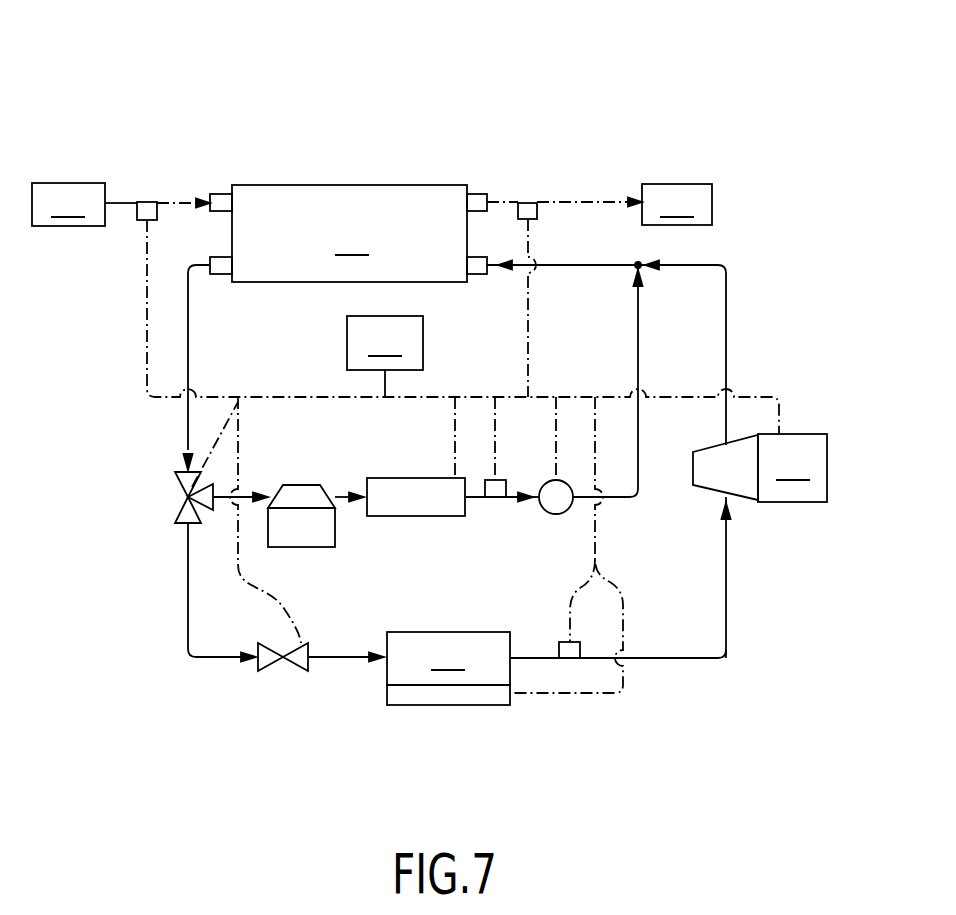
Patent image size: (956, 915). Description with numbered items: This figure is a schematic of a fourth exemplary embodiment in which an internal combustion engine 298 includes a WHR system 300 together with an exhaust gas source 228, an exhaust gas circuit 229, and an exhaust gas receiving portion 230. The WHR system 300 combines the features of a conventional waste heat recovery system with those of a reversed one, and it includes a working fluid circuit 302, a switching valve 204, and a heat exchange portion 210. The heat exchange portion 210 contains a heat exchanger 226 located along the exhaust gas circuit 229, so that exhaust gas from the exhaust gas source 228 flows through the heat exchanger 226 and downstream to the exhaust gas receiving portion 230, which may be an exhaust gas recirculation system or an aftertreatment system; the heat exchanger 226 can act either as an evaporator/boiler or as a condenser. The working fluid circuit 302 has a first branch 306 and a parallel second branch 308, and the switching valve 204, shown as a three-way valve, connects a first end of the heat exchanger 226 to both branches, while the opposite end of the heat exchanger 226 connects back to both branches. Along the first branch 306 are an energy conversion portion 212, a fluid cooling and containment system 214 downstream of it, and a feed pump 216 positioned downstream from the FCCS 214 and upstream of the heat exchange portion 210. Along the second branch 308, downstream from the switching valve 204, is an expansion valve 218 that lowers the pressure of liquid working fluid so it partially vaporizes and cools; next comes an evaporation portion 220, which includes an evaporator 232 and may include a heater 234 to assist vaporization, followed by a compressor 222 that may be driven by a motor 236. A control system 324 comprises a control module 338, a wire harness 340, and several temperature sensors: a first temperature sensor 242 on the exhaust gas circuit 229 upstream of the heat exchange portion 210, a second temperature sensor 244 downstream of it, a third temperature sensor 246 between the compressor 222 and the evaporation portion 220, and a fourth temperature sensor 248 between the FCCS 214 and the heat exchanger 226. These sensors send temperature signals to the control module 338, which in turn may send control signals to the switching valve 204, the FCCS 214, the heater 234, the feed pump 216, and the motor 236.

The internal combustion engine 298 is at (143, 108).
The exhaust gas source 228 is at (84, 204).
The first temperature sensor 242 is at (137, 208).
The exhaust gas circuit 229 is at (168, 203).
The heat exchange portion 210 is at (348, 200).
The heat exchanger 226 is at (355, 177).
The second temperature sensor 244 is at (537, 213).
The exhaust gas receiving portion 230 is at (677, 204).
The control system 324 is at (342, 325).
The control module 338 is at (385, 356).
The working fluid circuit 302 is at (188, 342).
The wire harness 340 is at (348, 396).
The switching valve 204 is at (180, 498).
The energy conversion portion 212 is at (298, 478).
The fluid cooling and containment system (FCCS) 214 is at (428, 478).
The fourth temperature sensor 248 is at (495, 500).
The feed pump 216 is at (556, 514).
The compressor 222 is at (693, 452).
The motor 236 is at (792, 468).
The first branch 306 is at (643, 467).
The second branch 308 is at (728, 557).
The expansion valve 218 is at (262, 645).
The evaporation portion 220 is at (421, 667).
The evaporator 232 is at (448, 658).
The heater 234 is at (402, 698).
The third temperature sensor 246 is at (559, 650).
The WHR system 300 is at (742, 660).